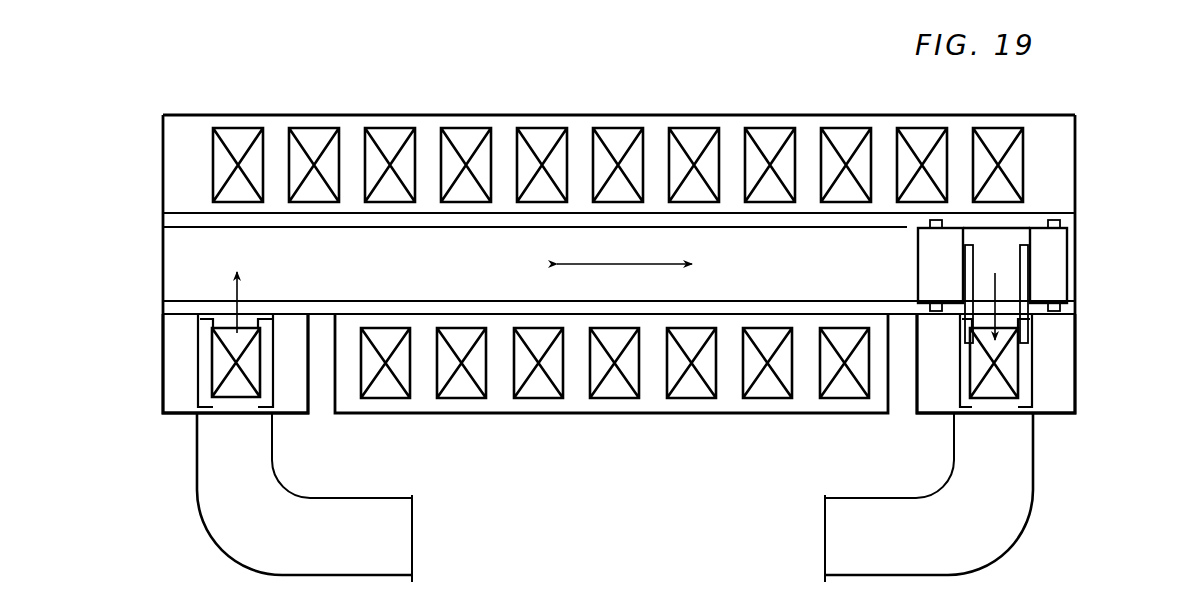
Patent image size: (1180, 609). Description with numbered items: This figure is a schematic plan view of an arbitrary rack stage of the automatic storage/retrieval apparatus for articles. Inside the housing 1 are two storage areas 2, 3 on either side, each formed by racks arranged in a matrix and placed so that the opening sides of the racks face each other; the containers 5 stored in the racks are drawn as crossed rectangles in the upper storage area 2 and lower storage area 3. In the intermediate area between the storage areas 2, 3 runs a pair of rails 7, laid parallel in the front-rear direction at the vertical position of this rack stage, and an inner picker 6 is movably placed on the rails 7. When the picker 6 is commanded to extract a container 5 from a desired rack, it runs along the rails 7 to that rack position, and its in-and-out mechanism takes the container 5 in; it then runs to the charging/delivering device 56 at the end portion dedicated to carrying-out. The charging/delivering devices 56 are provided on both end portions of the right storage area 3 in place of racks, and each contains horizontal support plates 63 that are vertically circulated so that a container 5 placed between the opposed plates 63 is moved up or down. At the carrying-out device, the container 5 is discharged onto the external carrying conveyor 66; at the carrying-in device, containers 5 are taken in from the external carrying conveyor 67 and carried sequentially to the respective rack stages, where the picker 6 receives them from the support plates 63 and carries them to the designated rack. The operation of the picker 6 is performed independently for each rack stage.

The housing 1 is at (163, 160).
The storage area 2 is at (628, 112).
The right storage area 3 is at (626, 416).
The container 5 is at (240, 130).
The inner picker 6 is at (1055, 262).
The rails 7 is at (163, 219).
The charging/delivering device 56 is at (158, 376).
The horizontal support plates 63 is at (178, 405).
The external carrying conveyor 66 is at (965, 538).
The external carrying conveyor 67 is at (311, 560).